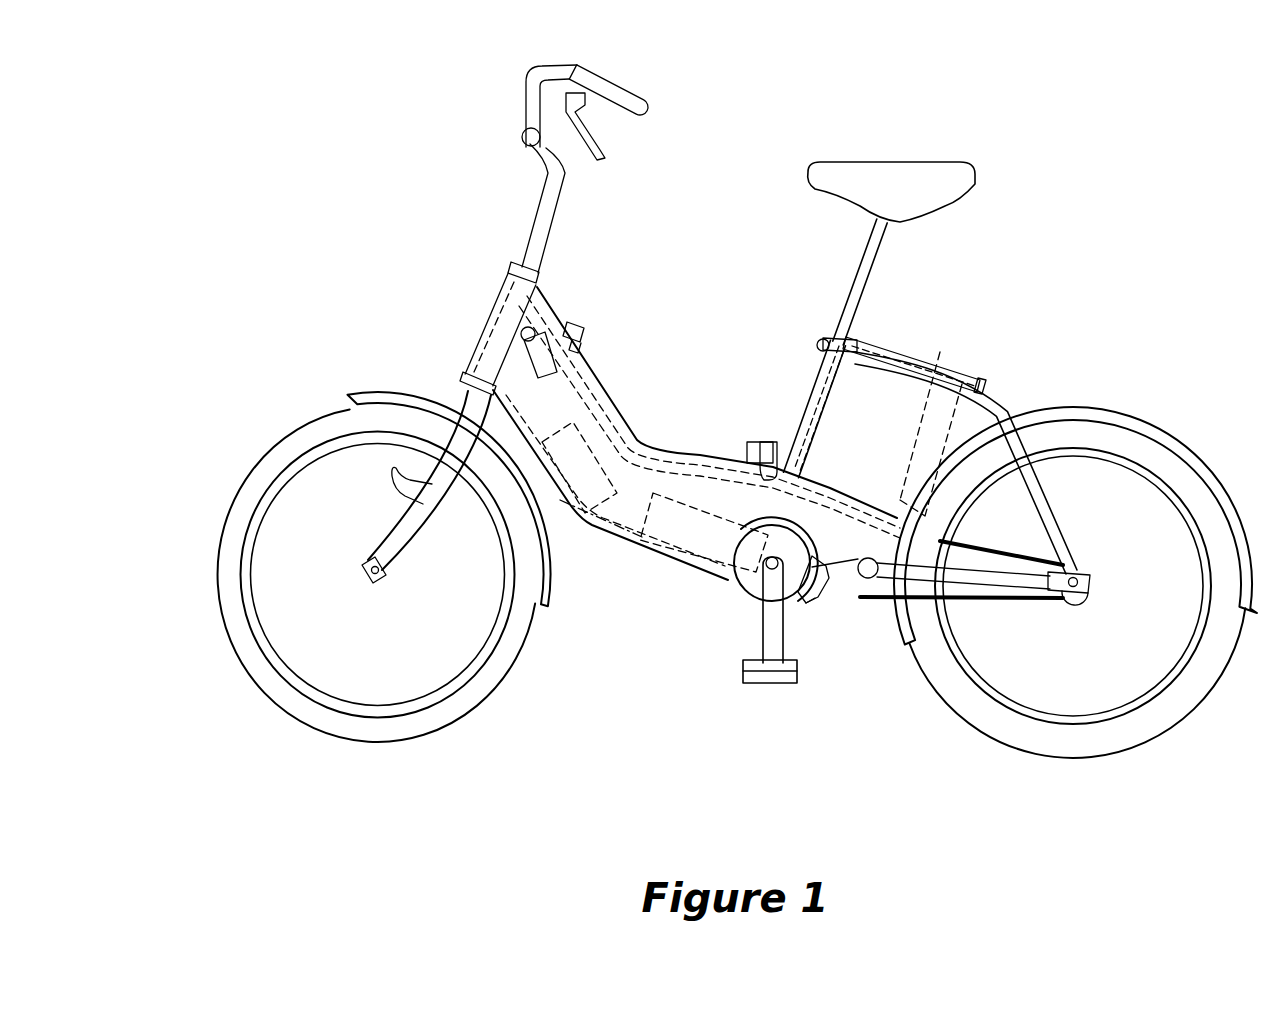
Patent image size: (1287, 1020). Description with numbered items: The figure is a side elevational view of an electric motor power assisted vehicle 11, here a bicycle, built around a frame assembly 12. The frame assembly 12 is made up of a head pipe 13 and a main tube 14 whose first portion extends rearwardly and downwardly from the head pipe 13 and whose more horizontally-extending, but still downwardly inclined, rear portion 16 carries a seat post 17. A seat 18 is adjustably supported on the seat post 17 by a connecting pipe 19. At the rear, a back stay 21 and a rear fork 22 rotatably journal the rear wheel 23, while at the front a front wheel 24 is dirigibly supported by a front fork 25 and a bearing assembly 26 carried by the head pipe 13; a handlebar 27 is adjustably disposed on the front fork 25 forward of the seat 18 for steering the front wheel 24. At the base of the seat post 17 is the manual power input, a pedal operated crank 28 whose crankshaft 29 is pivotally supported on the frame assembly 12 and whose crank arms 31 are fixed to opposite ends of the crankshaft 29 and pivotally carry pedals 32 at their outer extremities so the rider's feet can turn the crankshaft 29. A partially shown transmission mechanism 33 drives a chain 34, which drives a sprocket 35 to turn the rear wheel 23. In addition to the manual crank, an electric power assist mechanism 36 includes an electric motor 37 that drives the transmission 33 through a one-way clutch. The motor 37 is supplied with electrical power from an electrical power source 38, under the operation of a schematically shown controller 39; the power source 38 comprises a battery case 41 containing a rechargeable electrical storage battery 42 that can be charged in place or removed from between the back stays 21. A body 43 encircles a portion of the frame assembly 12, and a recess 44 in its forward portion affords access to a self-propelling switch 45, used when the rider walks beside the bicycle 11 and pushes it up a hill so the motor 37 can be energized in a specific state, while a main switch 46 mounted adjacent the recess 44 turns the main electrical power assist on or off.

The electric power assisted vehicle 11 is at (1005, 158).
The frame assembly 12 is at (650, 440).
The head pipe 13 is at (470, 360).
The main tube 14 is at (612, 412).
The rear portion of main tube 16 is at (700, 457).
The seat post 17 is at (806, 403).
The seat 18 is at (888, 162).
The connecting pipe 19 is at (852, 278).
The back stay 21 is at (1040, 520).
The rear fork 22 is at (920, 582).
The rear wheel 23 is at (1167, 730).
The front wheel 24 is at (483, 700).
The front fork 25 is at (392, 538).
The bearing assembly 26 is at (520, 270).
The handlebar 27 is at (527, 107).
The pedal operated crank 28 is at (865, 730).
The crankshaft 29 is at (785, 571).
The crank arms 31 is at (758, 660).
The pedals 32 is at (775, 672).
The transmission mechanism 33 is at (753, 597).
The chain 34 is at (990, 603).
The sprocket 35 is at (1082, 596).
The electric power assist mechanism 36 is at (705, 612).
The electric motor 37 is at (678, 556).
The electrical power source 38 is at (960, 305).
The controller 39 is at (562, 505).
The battery case 41 is at (877, 345).
The electrical storage battery 42 is at (937, 352).
The body 43 is at (612, 525).
The recess 44 is at (582, 333).
The self-propelling switch 45 is at (520, 338).
The main switch 46 is at (600, 382).